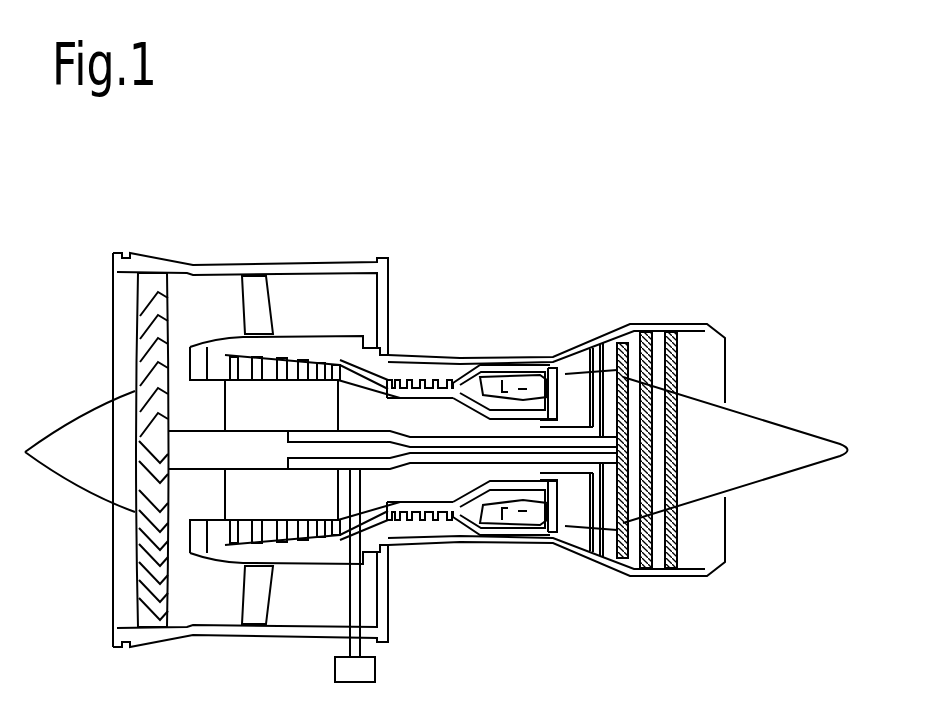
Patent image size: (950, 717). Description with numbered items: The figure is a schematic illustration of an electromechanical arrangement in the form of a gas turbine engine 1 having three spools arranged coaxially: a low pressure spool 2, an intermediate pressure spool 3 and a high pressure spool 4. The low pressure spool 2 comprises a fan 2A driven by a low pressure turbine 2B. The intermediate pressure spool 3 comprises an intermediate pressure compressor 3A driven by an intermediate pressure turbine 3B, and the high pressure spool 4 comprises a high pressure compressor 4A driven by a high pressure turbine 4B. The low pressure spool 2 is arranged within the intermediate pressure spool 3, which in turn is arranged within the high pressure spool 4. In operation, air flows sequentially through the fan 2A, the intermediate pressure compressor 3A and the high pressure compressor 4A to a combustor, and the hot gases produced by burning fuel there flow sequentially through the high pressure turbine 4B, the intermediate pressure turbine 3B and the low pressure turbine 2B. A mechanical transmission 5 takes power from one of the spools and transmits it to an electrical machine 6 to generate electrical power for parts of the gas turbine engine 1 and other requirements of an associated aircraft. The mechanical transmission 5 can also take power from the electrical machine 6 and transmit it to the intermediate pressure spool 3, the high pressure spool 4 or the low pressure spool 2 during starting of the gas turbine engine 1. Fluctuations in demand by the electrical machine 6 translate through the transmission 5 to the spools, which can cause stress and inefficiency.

The gas turbine engine 1 is at (172, 203).
The low pressure spool 2 is at (192, 453).
The fan 2A is at (157, 578).
The low pressure turbine 2B is at (660, 345).
The intermediate pressure spool 3 is at (423, 433).
The intermediate pressure compressor 3A is at (295, 360).
The intermediate pressure turbine 3B is at (596, 363).
The high pressure spool 4 is at (470, 500).
The high pressure compressor 4A is at (423, 507).
The high pressure turbine 4B is at (553, 530).
The mechanical transmission 5 is at (355, 618).
The electrical machine 6 is at (335, 668).